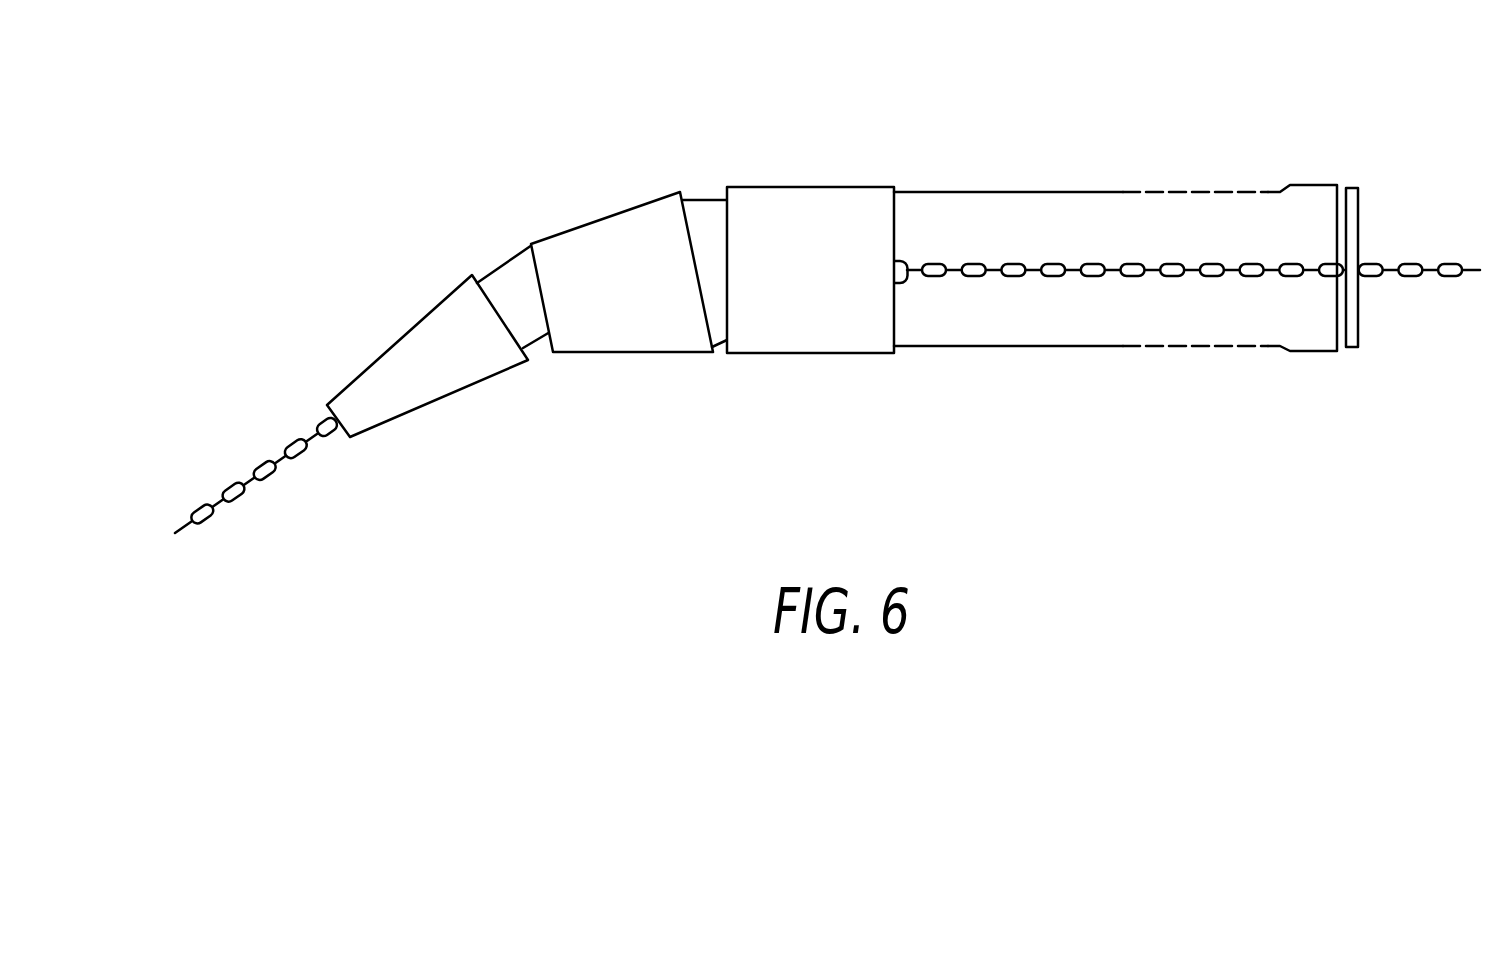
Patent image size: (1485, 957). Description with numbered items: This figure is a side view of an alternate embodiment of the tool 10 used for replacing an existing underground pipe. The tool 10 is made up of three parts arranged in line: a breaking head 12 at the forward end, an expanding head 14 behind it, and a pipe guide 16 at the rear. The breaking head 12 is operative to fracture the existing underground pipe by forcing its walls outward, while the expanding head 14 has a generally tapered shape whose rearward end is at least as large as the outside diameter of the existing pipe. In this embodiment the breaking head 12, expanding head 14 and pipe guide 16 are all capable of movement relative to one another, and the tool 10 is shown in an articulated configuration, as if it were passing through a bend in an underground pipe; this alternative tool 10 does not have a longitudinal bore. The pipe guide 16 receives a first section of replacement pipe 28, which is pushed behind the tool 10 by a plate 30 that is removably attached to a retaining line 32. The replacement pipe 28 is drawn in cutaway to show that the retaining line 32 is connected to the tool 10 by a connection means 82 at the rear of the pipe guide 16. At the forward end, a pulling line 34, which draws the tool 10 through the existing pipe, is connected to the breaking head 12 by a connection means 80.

The tool 10 is at (800, 94).
The breaking head 12 is at (409, 331).
The expanding head 14 is at (588, 223).
The pipe guide 16 is at (828, 186).
The replacement pipe 28 is at (1058, 347).
The plate 30 is at (1352, 188).
The retaining line 32 is at (1412, 277).
The pulling line 34 is at (240, 503).
The connection means 80 is at (322, 420).
The connection means 82 is at (900, 262).